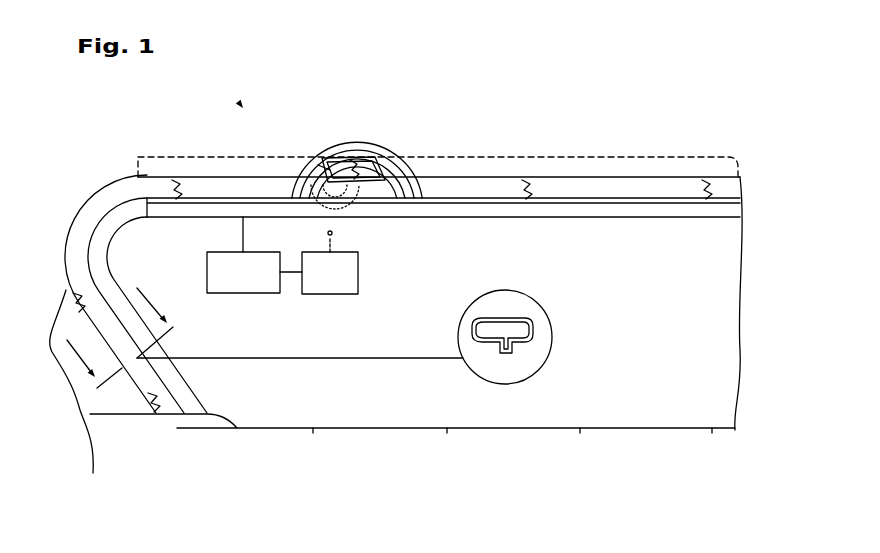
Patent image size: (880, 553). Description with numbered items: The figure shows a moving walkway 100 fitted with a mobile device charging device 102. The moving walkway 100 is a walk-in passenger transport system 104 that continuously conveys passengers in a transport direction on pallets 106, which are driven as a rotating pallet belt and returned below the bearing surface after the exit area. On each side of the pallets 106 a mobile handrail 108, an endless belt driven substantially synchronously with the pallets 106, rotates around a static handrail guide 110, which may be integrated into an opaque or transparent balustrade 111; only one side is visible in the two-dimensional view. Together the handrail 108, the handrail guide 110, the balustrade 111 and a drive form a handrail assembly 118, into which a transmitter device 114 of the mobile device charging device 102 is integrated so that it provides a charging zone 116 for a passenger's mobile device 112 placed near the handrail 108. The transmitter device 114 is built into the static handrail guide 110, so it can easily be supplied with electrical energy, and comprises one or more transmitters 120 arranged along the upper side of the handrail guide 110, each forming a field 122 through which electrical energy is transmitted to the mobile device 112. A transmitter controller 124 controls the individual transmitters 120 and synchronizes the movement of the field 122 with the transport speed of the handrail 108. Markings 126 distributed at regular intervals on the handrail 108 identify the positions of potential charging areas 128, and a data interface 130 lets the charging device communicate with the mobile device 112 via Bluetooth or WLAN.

The moving walkway 100 is at (238, 104).
The mobile device charging device 102 is at (378, 133).
The walk-in passenger transport system 104 is at (239, 104).
The pallets 106 is at (258, 430).
The handrail 108 is at (638, 176).
The handrail guide 110 is at (97, 238).
The balustrade 111 is at (134, 265).
The mobile device 112 is at (355, 157).
The transmitter device 114 is at (608, 218).
The charging zone 116 is at (470, 156).
The handrail assembly 118 is at (87, 179).
The transmitter 120 is at (670, 204).
The field 122 is at (318, 165).
The transmitter controller 124 is at (245, 283).
The markings 126 is at (354, 190).
The charging areas 128 is at (527, 195).
The data interface 130 is at (327, 285).